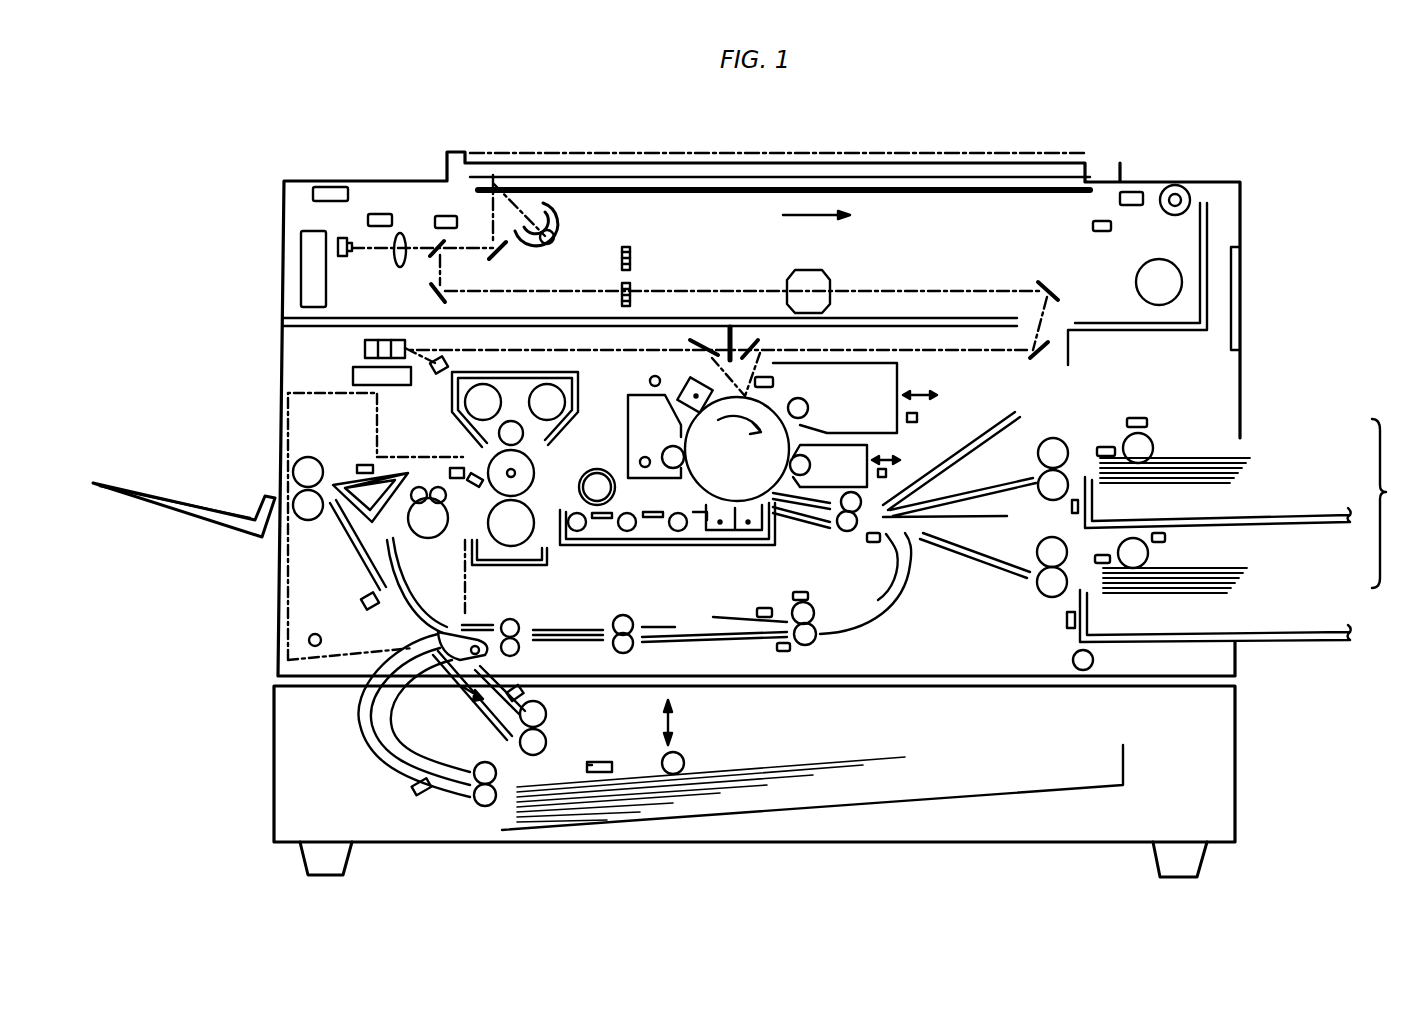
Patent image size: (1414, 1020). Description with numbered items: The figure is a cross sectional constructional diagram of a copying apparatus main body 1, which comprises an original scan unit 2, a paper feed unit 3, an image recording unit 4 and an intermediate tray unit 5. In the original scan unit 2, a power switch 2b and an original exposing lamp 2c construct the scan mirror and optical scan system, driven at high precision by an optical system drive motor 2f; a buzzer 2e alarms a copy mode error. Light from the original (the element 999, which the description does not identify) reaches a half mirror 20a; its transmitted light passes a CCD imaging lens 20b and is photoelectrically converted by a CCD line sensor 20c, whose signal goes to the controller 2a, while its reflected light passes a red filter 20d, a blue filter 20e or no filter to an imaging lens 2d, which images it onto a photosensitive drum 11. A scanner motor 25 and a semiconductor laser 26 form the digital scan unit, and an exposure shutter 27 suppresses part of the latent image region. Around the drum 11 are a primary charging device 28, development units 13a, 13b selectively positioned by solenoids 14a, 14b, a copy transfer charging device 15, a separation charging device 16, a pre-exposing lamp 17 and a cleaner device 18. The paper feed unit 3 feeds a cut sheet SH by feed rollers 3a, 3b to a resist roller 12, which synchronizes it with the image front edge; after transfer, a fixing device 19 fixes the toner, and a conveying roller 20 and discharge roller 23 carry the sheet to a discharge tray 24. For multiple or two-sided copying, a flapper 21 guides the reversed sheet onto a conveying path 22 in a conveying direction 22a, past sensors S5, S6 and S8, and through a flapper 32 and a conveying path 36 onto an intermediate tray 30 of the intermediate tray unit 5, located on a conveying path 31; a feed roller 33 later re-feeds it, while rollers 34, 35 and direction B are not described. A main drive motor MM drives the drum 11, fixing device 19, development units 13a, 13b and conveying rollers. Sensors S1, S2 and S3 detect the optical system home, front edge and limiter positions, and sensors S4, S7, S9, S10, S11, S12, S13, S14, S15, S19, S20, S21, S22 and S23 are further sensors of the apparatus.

The copying apparatus main body 1 is at (352, 84).
The original scan unit 2 is at (283, 247).
The controller 2a is at (325, 276).
The power switch 2b is at (327, 187).
The original exposing lamp 2c is at (567, 218).
The imaging lens 2d is at (810, 272).
The buzzer 2e is at (1182, 186).
The optical system drive motor 2f is at (1138, 292).
The original document 999 is at (718, 162).
The sensor S1 is at (377, 214).
The sensor S2 is at (440, 216).
The sensor S3 is at (1098, 232).
The sensor S4 is at (458, 466).
The sensor S5 is at (760, 608).
The sensor S6 is at (790, 647).
The sensor S7 is at (872, 543).
The sensor S8 is at (800, 592).
The sensor S9 is at (1107, 447).
The sensor S10 is at (1140, 418).
The sensor S11 is at (1093, 563).
The sensor S12 is at (1168, 537).
The sensor S13 is at (363, 600).
The sensor S14 is at (1130, 192).
The sensor S15 is at (1073, 660).
The sensor S19 is at (526, 694).
The sensor S20 is at (585, 767).
The sensor S21 is at (420, 792).
The sensor S22 is at (1076, 500).
The sensor S23 is at (1067, 620).
The conveying roller 20 is at (430, 539).
The half mirror 20a is at (434, 243).
The CCD imaging lens 20b is at (401, 268).
The CCD line sensor 20c is at (337, 247).
The red filter 20d is at (621, 293).
The blue filter 20e is at (621, 257).
The primary charging device 28 is at (690, 384).
The exposure shutter 27 is at (765, 377).
The image recording unit 4 is at (283, 359).
The scanner motor 25 is at (353, 374).
The semiconductor laser 26 is at (438, 373).
The pre-exposing lamp 17 is at (649, 381).
The cleaner device 18 is at (628, 410).
The main drive motor MM is at (597, 469).
The photosensitive drum 11 is at (697, 479).
The development unit 13a is at (810, 405).
The development unit 13b is at (810, 465).
The solenoid 14a is at (918, 418).
The solenoid 14b is at (888, 470).
The fixing device 19 is at (547, 560).
The flapper 21 is at (350, 484).
The conveying path 22 is at (375, 542).
The conveying direction 22a is at (690, 626).
The discharge roller 23 is at (295, 470).
The discharge tray 24 is at (204, 506).
The copy transfer charging device 15 is at (747, 535).
The separation charging device 16 is at (722, 536).
The resist roller 12 is at (845, 530).
The paper feed unit 3 is at (1144, 500).
The feed roller 3a is at (1155, 446).
The feed roller 3b is at (1150, 553).
The cut sheet SH is at (1225, 457).
The intermediate tray 30 is at (1070, 790).
The conveying path 31 is at (373, 750).
The flapper 32 is at (440, 658).
The feed roller 33 is at (483, 808).
The feed roller 34 is at (548, 716).
The pickup roller 35 is at (683, 758).
The conveying path 36 is at (492, 728).
The paper transport direction B is at (460, 697).
The intermediate tray unit 5 is at (835, 843).